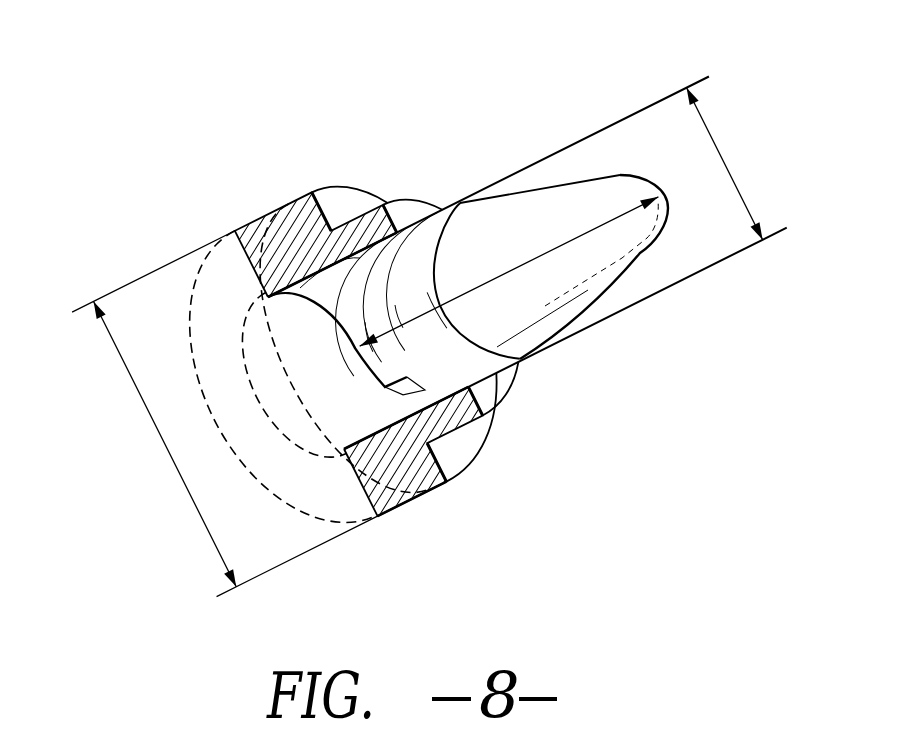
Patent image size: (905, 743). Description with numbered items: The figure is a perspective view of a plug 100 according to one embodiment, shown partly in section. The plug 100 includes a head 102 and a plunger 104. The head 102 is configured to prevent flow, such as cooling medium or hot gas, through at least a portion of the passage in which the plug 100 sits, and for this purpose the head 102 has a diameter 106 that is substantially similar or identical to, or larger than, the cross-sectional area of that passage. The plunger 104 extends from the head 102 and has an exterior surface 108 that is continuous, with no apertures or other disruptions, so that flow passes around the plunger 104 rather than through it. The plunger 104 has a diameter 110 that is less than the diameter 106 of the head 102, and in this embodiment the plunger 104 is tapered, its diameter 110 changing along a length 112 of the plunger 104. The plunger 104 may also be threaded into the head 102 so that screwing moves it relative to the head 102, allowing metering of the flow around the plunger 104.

The plug 100 is at (233, 107).
The head 102 is at (263, 216).
The plunger 104 is at (597, 258).
The diameter 106 is at (158, 432).
The exterior surface 108 is at (613, 175).
The diameter 110 is at (727, 160).
The length 112 is at (540, 254).